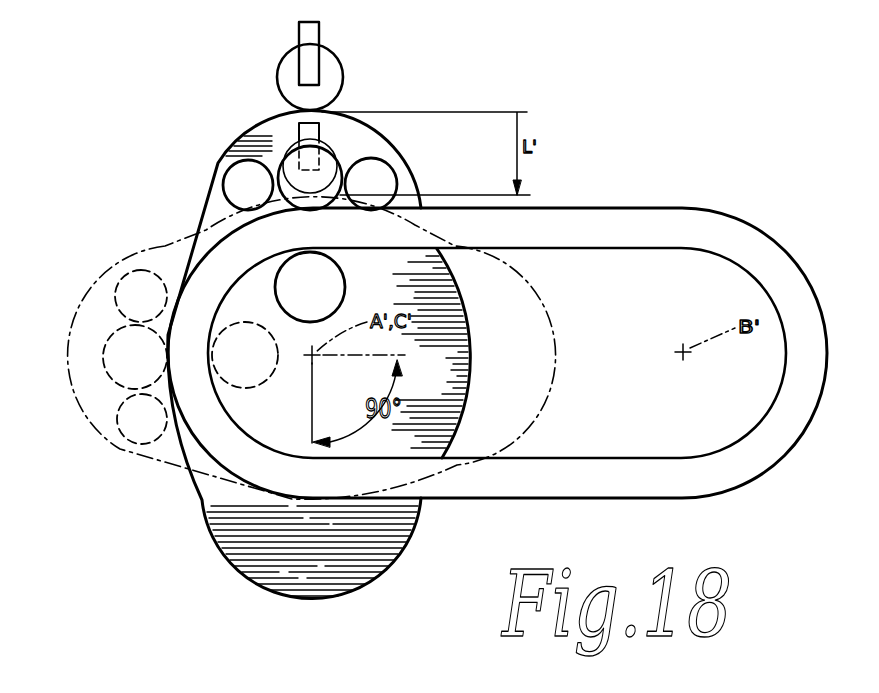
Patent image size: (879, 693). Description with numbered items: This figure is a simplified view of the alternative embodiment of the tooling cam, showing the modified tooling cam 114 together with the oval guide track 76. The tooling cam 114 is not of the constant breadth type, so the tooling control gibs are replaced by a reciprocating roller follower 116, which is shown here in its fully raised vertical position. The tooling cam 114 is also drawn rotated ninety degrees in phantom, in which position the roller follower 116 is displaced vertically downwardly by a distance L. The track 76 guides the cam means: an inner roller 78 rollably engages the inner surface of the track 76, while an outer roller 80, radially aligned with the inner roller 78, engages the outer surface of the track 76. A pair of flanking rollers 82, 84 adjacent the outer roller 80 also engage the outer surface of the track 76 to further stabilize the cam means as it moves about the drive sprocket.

The oval guide track 76 is at (675, 218).
The modified tooling cam 114 is at (205, 200).
The reciprocating roller follower 116 is at (331, 63).
The outer roller 80 is at (293, 163).
The flanking roller 82 is at (237, 183).
The flanking roller 84 is at (388, 182).
The inner roller 78 is at (330, 272).